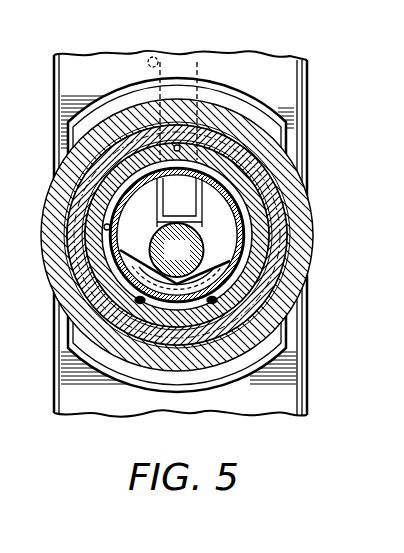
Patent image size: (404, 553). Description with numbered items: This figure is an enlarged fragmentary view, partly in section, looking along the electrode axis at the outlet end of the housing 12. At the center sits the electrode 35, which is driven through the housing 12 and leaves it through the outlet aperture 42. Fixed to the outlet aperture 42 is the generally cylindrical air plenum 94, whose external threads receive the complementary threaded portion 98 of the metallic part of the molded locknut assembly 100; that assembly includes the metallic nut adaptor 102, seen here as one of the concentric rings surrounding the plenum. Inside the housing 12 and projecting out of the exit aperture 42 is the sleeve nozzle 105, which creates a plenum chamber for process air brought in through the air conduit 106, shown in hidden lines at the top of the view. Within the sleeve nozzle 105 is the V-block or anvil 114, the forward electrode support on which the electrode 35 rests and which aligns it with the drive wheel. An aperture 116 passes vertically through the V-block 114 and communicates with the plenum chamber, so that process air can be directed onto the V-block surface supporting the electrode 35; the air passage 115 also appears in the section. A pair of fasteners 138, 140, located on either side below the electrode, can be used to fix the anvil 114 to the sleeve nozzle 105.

The housing 12 is at (257, 58).
The electrode 35 is at (190, 261).
The outlet aperture 42 is at (104, 228).
The air plenum 94 is at (247, 117).
The threaded portion 98 is at (158, 134).
The molded locknut assembly 100 is at (316, 212).
The metallic nut adaptor 102 is at (123, 130).
The sleeve nozzle 105 is at (230, 261).
The air conduit 106 is at (153, 56).
The V-block 114 is at (214, 259).
The air passage 115 is at (133, 385).
The aperture 116 is at (158, 197).
The fastener 138 is at (137, 301).
The fastener 140 is at (214, 301).